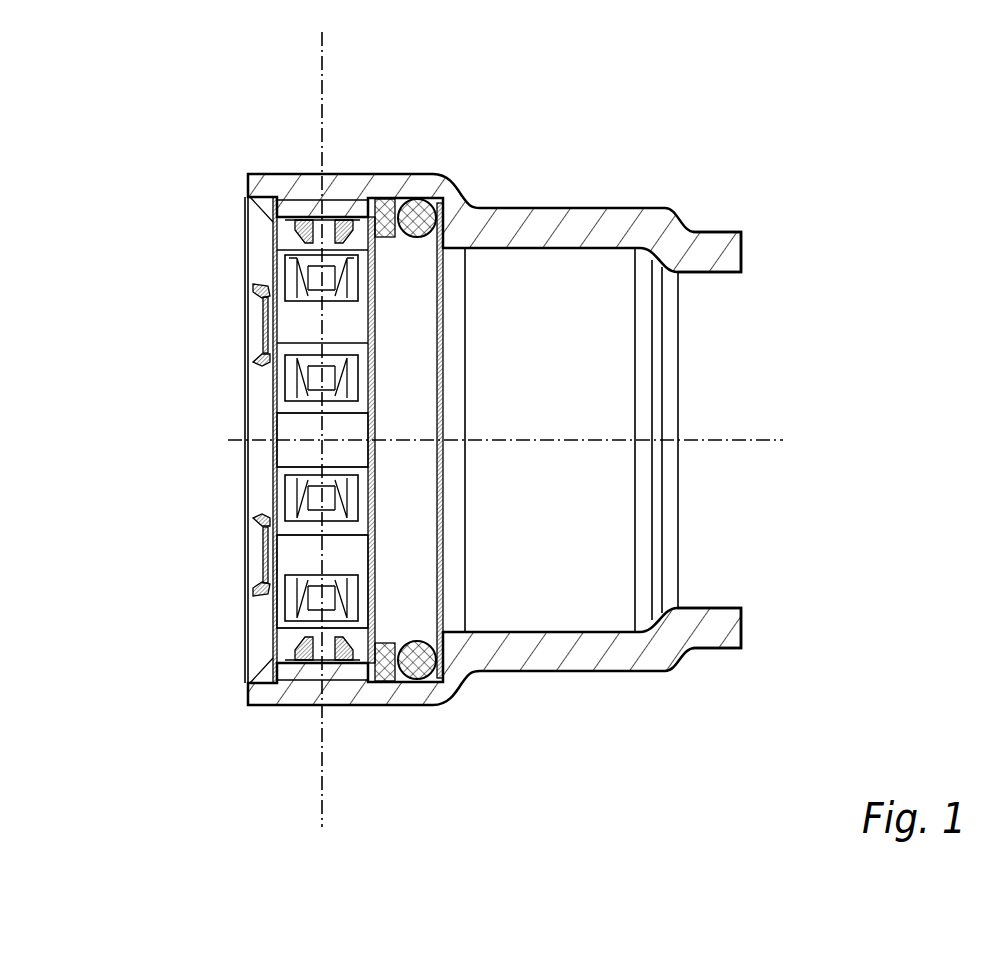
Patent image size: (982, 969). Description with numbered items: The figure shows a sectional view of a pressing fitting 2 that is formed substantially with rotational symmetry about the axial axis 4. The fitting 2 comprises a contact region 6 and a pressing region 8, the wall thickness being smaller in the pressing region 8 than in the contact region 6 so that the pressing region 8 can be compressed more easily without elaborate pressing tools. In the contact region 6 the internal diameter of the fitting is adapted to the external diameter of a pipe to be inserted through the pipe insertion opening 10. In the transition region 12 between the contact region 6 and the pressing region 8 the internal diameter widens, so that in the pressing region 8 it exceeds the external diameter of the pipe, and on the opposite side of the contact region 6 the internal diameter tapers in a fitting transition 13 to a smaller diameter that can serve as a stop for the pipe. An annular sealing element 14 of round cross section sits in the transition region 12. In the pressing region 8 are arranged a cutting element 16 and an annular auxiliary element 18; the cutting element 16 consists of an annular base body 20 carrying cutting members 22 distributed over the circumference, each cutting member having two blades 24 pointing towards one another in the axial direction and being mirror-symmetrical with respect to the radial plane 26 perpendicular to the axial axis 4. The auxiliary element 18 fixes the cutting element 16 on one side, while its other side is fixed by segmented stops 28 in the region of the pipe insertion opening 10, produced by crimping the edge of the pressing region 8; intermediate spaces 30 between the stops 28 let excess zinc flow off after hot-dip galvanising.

The fitting 2 is at (627, 60).
The axial axis 4 is at (767, 437).
The contact region 6 is at (557, 205).
The pressing region 8 is at (340, 167).
The pipe insertion opening 10 is at (130, 250).
The transition region 12 is at (447, 160).
The fitting transition 13 is at (695, 208).
The sealing element 14 is at (440, 690).
The cutting element 16 is at (288, 452).
The auxiliary element 18 is at (380, 703).
The annular base body 20 is at (313, 557).
The cutting members 22 is at (268, 527).
The blades 24 is at (338, 377).
The radial plane 26 is at (322, 807).
The stops 28 is at (260, 320).
The intermediate spaces 30 is at (260, 377).